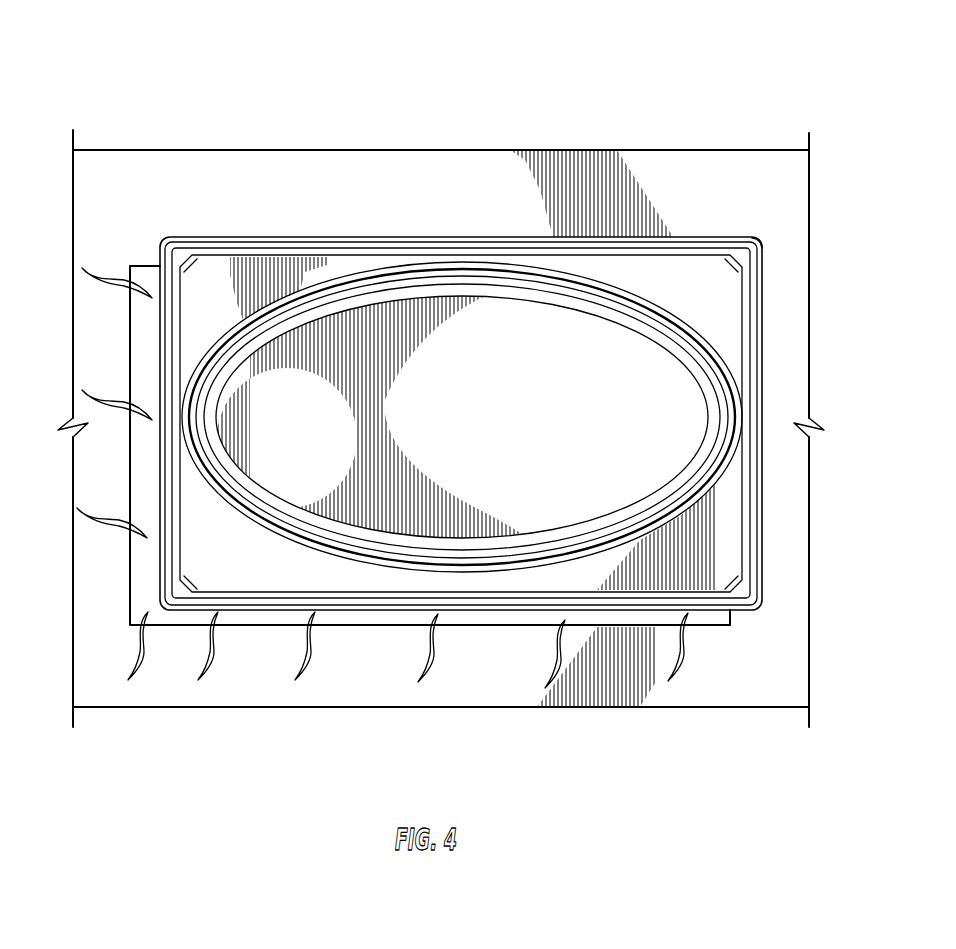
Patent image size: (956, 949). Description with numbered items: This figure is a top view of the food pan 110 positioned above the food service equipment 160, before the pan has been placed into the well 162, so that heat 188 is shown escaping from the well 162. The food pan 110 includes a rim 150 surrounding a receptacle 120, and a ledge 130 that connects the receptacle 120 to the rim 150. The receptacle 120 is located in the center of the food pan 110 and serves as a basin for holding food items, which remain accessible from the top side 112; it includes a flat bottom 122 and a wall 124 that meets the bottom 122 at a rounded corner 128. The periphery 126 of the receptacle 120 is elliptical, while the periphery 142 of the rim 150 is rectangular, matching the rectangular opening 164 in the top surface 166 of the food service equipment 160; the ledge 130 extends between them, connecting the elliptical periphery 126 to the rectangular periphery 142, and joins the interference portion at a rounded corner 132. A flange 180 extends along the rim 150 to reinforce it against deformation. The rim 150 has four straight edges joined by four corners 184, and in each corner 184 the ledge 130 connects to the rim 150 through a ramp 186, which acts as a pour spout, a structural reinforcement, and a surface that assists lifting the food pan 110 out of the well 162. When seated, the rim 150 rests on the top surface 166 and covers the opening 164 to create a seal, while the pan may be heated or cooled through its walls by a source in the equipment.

The food pan 110 is at (588, 213).
The top side 112 is at (270, 276).
The receptacle 120 is at (427, 357).
The bottom 122 is at (598, 428).
The wall 124 is at (408, 570).
The periphery of the receptacle 126 is at (618, 320).
The corner 128 is at (643, 318).
The ledge 130 is at (230, 309).
The corner 132 is at (345, 562).
The periphery of the rim 142 is at (323, 237).
The rim 150 is at (463, 233).
The food service equipment 160 is at (137, 685).
The well 162 is at (148, 530).
The opening 164 is at (128, 448).
The top surface 166 is at (146, 202).
The flange 180 is at (202, 237).
The corners 184 is at (740, 263).
The ramp 186 is at (753, 257).
The heat 188 is at (558, 665).